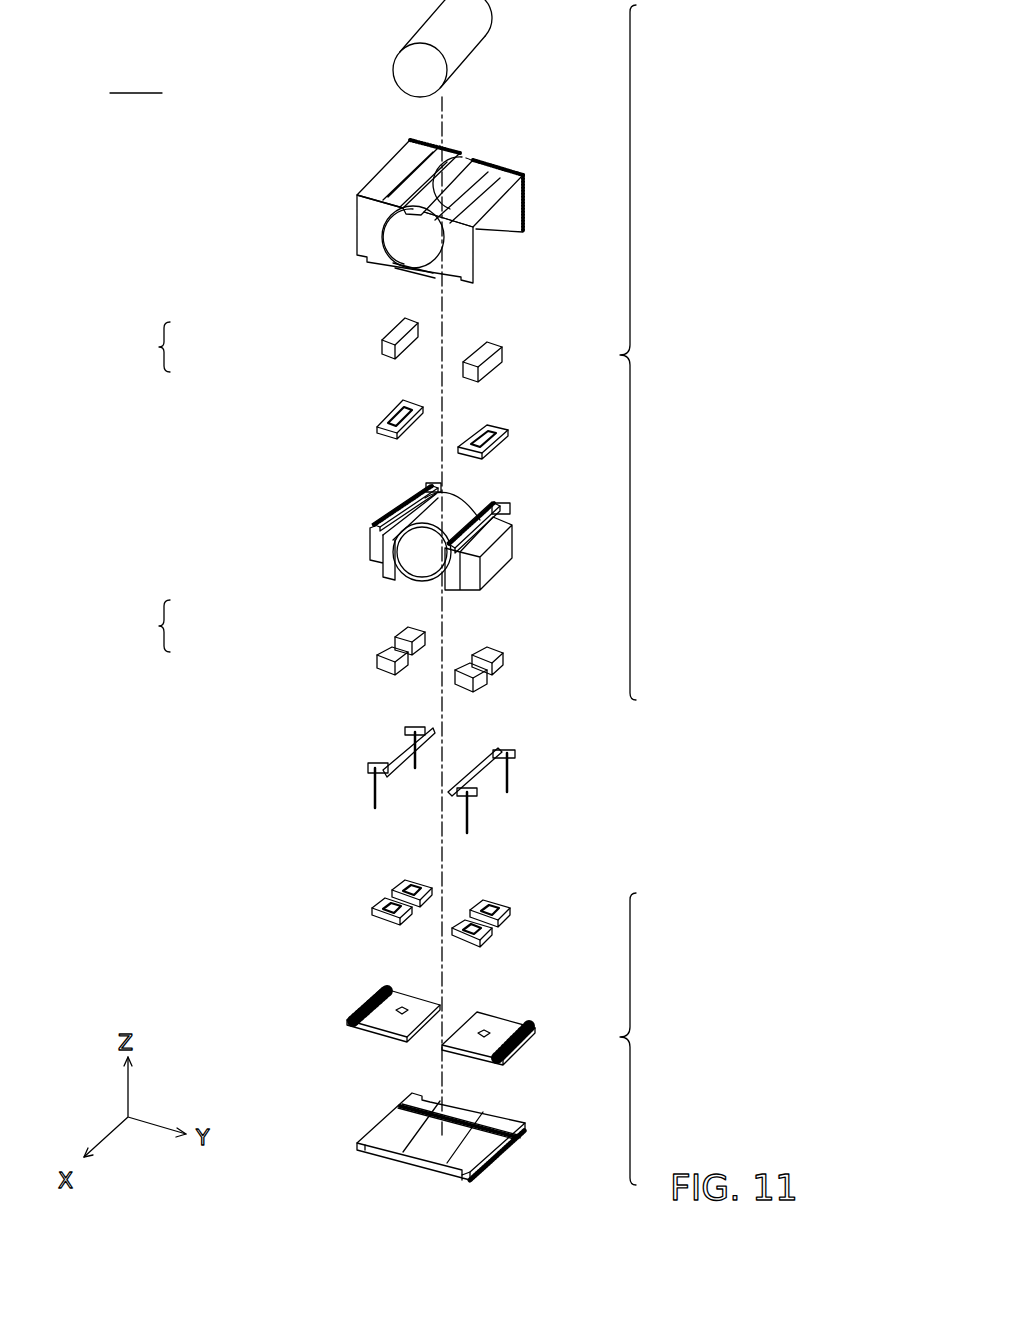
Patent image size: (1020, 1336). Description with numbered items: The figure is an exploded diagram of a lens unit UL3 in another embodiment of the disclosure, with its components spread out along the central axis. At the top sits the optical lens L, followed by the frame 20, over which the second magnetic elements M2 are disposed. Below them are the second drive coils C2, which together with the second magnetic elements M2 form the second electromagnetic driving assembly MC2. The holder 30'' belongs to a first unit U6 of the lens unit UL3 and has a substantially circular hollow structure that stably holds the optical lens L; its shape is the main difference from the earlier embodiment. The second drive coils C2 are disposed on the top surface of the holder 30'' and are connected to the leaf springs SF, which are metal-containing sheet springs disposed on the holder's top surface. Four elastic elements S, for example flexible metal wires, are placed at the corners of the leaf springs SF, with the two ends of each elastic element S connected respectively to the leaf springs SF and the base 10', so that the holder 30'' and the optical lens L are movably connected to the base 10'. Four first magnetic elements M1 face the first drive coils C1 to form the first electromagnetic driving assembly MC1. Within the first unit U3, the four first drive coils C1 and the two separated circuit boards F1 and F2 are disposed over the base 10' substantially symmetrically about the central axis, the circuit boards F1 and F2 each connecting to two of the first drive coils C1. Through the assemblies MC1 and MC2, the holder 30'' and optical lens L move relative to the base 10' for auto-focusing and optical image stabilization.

The optical lens L is at (418, 73).
The frame 20 is at (357, 240).
The second magnetic elements M2 is at (382, 333).
The second drive coils C2 is at (380, 409).
The holder 30'' is at (486, 547).
The first magnetic elements M1 is at (380, 652).
The leaf springs SF is at (404, 757).
The elastic elements S is at (372, 782).
The first drive coils C1 is at (372, 908).
The circuit board F2 is at (362, 1000).
The circuit board F1 is at (497, 1040).
The base 10' is at (421, 1120).
The first unit U6 is at (650, 352).
The first unit U3 is at (650, 1039).
The second electromagnetic driving assembly MC2 is at (151, 348).
The first electromagnetic driving assembly MC1 is at (151, 627).
The lens unit UL3 is at (136, 80).